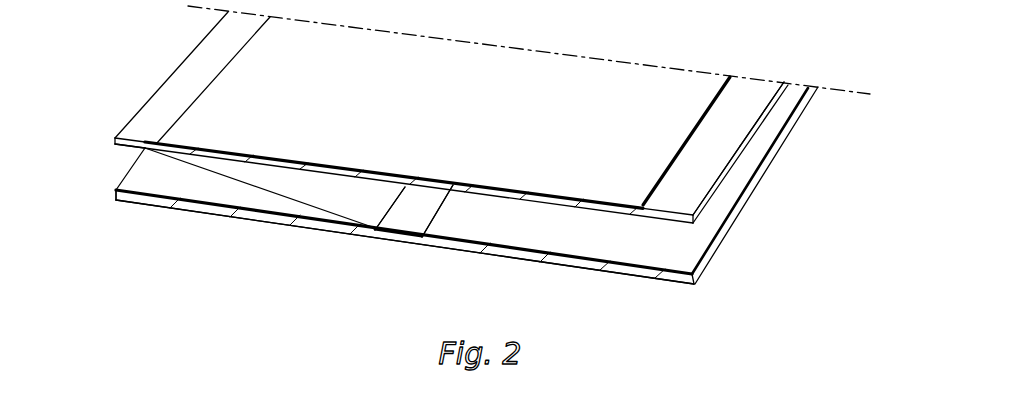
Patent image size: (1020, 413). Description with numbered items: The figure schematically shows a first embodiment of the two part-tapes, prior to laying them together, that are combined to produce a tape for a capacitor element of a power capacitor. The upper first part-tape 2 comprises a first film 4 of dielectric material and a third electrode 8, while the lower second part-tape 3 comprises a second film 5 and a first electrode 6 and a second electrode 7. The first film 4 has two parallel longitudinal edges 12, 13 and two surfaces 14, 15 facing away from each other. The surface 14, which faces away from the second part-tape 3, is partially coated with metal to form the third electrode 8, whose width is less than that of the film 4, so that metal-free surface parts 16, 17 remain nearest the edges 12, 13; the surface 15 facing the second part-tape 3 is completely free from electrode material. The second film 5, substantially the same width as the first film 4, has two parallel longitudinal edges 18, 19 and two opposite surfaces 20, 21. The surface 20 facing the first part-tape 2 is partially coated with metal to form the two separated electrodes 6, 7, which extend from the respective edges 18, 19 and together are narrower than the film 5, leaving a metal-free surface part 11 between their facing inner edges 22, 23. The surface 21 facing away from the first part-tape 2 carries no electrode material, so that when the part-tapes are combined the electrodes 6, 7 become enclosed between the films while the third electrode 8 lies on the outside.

The first part-tape 2 is at (127, 79).
The second part-tape 3 is at (678, 312).
The first film 4 is at (115, 140).
The second film 5 is at (116, 197).
The first electrode 6 is at (237, 193).
The second electrode 7 is at (557, 243).
The third electrode 8 is at (452, 121).
The surface part 11 is at (421, 204).
The edge 12 is at (195, 47).
The edge 13 is at (747, 138).
The surface 14 is at (729, 112).
The surface 15 is at (132, 149).
The surface part 16 is at (207, 88).
The surface part 17 is at (689, 170).
The edge 18 is at (128, 171).
The edge 19 is at (730, 228).
The surface 20 is at (389, 232).
The surface 21 is at (320, 232).
The inner edge 22 is at (389, 210).
The inner edge 23 is at (436, 213).